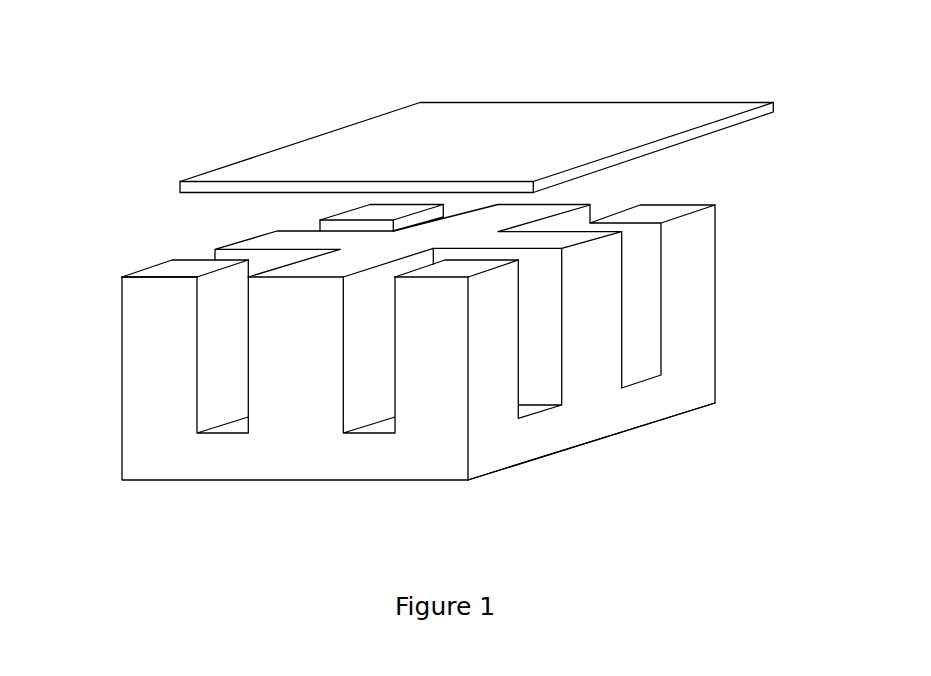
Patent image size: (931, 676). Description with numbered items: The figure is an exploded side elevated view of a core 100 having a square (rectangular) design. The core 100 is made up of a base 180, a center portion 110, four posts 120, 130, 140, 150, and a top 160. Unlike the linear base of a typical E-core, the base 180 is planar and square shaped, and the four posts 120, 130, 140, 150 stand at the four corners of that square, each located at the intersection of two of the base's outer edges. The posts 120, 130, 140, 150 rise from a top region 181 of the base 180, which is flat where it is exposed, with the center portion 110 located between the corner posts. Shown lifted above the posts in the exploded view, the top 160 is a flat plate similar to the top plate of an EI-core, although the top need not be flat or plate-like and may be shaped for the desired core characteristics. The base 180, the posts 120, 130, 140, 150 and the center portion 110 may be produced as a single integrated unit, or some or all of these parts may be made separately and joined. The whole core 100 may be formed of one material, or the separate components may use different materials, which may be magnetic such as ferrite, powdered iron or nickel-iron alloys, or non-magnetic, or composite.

The core 100 is at (822, 317).
The center portion 110 is at (297, 378).
The post 120 is at (450, 345).
The post 130 is at (697, 257).
The post 140 is at (323, 208).
The post 150 is at (163, 343).
The top 160 is at (477, 125).
The base 180 is at (613, 415).
The top region 181 is at (528, 410).